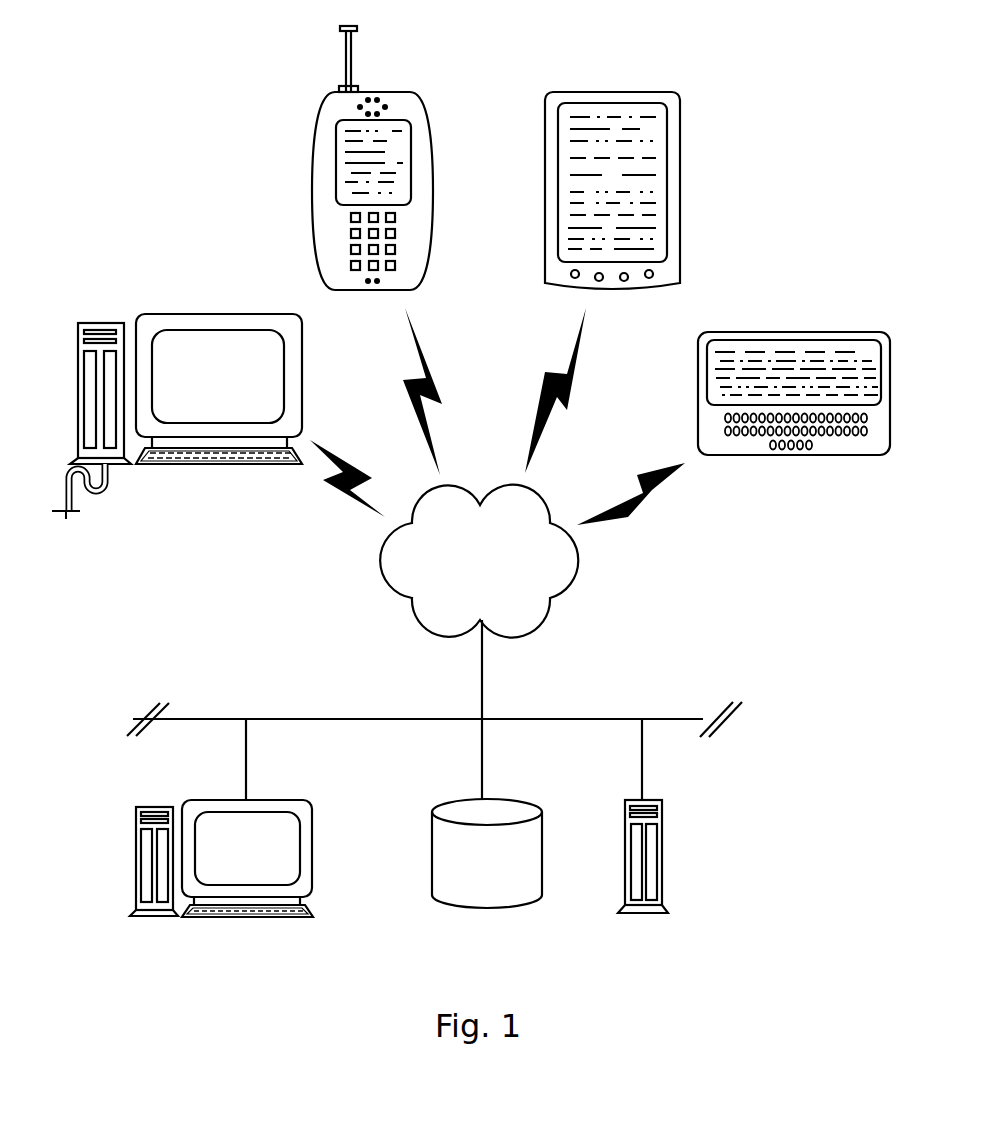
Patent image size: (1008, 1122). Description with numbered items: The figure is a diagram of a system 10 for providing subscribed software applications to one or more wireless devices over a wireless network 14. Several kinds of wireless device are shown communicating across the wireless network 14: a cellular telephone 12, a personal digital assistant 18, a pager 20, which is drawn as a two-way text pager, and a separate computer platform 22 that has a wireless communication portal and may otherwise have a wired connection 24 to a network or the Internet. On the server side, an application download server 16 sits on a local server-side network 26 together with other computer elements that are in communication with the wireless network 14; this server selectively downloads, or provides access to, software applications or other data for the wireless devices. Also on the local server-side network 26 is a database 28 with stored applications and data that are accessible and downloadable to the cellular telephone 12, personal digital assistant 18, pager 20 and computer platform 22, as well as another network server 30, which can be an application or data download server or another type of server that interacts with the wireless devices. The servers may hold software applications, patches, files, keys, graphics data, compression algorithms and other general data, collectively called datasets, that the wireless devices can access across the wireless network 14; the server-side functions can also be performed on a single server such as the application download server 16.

The system 10 is at (800, 165).
The cellular telephone 12 is at (412, 92).
The wireless network 14 is at (579, 562).
The application download server 16 is at (222, 800).
The personal digital assistant 18 is at (617, 92).
The pager 20 is at (826, 456).
The computer platform 22 is at (210, 314).
The wired connection 24 is at (114, 497).
The local server-side network 26 is at (530, 719).
The database 28 is at (431, 853).
The server 30 is at (663, 835).